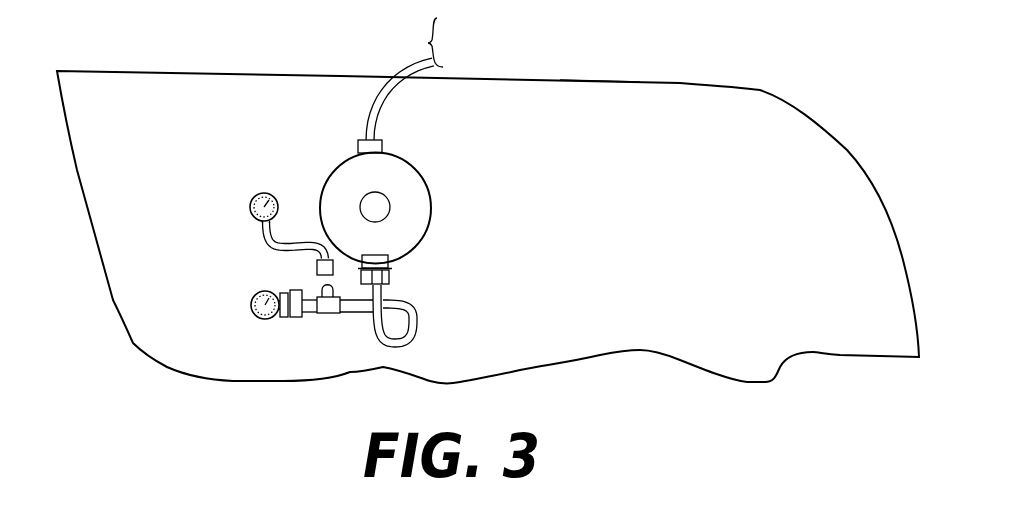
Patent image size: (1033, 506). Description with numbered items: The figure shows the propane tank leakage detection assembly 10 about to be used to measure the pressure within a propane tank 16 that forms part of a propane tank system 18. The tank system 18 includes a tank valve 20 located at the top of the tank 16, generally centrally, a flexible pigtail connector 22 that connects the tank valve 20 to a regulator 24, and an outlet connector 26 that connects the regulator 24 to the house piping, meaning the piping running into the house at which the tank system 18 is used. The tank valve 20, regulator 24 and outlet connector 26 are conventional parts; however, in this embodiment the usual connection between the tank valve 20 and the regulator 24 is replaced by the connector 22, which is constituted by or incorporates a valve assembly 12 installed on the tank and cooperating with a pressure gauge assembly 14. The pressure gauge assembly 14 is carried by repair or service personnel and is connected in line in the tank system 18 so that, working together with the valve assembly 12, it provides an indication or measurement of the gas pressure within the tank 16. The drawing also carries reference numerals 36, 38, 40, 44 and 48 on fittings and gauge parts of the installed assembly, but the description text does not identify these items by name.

The propane tank leakage detection assembly 10 is at (424, 294).
The valve assembly 12 is at (337, 320).
The pressure gauge assembly 14 is at (258, 242).
The propane tank 16 is at (745, 107).
The propane tank system 18 is at (604, 68).
The tank valve 20 is at (252, 313).
The pigtail connector 22 is at (410, 335).
The regulator 24 is at (407, 178).
The outlet connector 26 is at (380, 98).
The fitting 36 is at (293, 320).
The fitting 38 is at (392, 277).
The pressure gauge 40 is at (261, 185).
The hose section 44 is at (299, 240).
The connector 48 is at (315, 268).